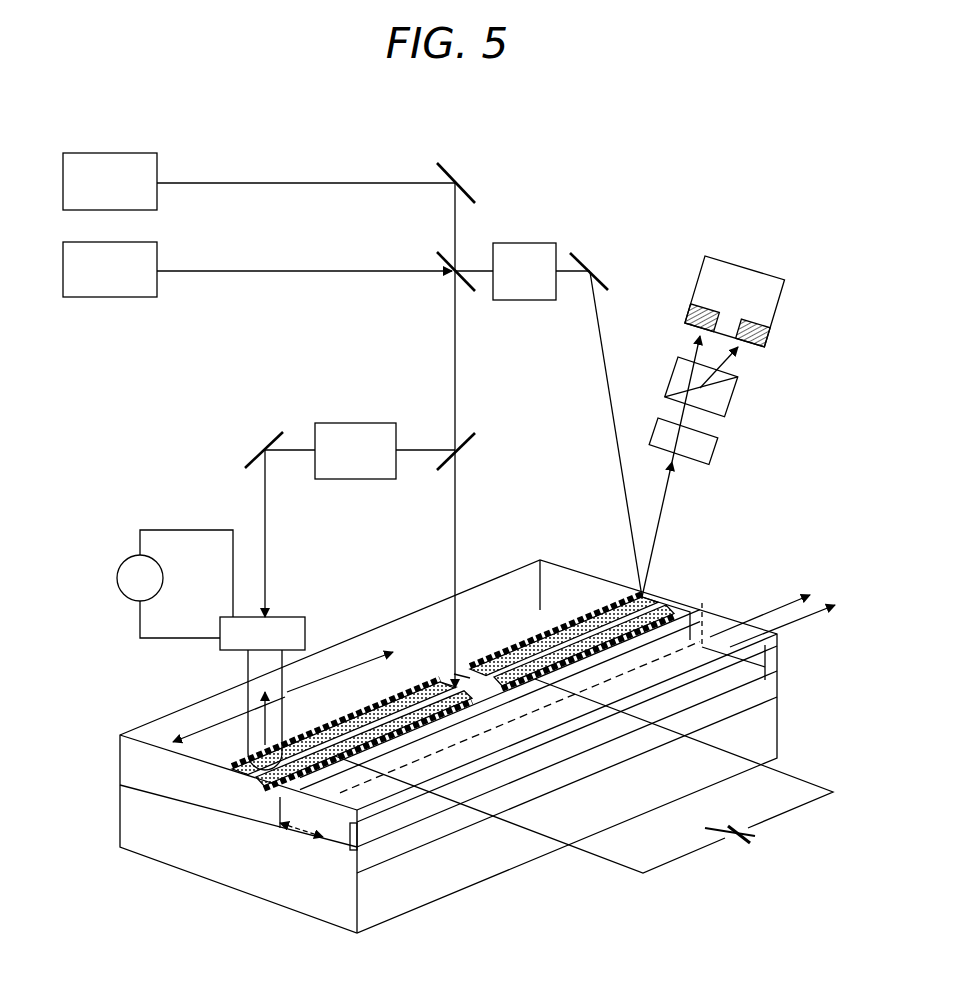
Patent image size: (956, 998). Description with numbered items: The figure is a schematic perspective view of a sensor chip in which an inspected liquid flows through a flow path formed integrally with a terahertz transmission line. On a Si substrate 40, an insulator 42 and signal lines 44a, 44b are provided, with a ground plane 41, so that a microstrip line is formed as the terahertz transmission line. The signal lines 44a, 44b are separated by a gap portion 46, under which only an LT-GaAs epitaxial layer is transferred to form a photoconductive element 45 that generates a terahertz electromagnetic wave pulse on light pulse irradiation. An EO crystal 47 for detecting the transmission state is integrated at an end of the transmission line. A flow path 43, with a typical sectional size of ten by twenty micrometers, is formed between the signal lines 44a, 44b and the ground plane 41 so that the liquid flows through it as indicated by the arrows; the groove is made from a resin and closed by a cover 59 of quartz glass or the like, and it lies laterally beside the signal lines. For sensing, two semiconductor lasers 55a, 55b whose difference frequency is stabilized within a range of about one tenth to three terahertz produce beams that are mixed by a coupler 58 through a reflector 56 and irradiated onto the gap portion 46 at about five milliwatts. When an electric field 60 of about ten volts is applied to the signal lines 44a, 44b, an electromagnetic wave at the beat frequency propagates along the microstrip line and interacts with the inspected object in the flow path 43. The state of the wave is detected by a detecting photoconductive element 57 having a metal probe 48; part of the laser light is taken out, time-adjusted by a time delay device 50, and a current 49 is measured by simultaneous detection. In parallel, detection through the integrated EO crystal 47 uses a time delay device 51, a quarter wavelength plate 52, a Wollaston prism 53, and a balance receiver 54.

The Si substrate 40 is at (440, 887).
The ground plane 41 is at (158, 789).
The insulator 42 is at (130, 755).
The flow path 43 is at (325, 842).
The signal line 44a is at (370, 715).
The signal line 44b is at (527, 647).
The photoconductive element 45 is at (436, 681).
The gap portion 46 is at (455, 684).
The EO crystal 47 is at (663, 598).
The metal probe 48 is at (248, 674).
The current 49 is at (124, 556).
The time delay device 50 is at (338, 423).
The time delay device 51 is at (535, 243).
The quarter wavelength plate 52 is at (712, 445).
The Wollaston prism 53 is at (730, 390).
The balance receiver 54 is at (756, 278).
The semiconductor laser 55a is at (118, 153).
The semiconductor laser 55b is at (120, 297).
The reflector 56 is at (462, 178).
The detecting photoconductive element 57 is at (240, 617).
The coupler 58 is at (447, 262).
The cover 59 is at (277, 800).
The electric field 60 is at (752, 852).